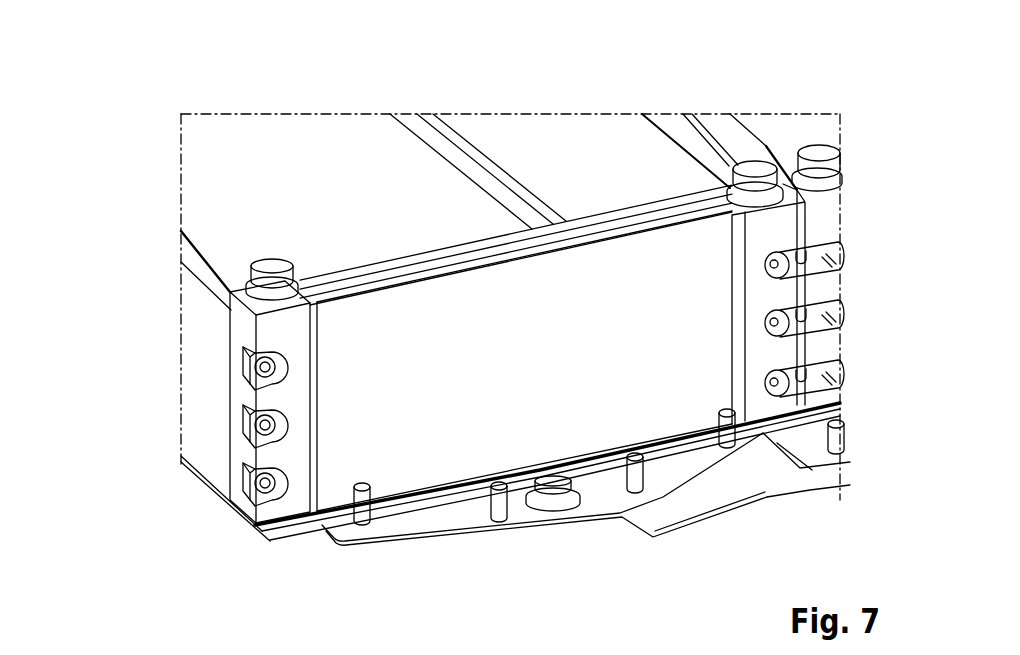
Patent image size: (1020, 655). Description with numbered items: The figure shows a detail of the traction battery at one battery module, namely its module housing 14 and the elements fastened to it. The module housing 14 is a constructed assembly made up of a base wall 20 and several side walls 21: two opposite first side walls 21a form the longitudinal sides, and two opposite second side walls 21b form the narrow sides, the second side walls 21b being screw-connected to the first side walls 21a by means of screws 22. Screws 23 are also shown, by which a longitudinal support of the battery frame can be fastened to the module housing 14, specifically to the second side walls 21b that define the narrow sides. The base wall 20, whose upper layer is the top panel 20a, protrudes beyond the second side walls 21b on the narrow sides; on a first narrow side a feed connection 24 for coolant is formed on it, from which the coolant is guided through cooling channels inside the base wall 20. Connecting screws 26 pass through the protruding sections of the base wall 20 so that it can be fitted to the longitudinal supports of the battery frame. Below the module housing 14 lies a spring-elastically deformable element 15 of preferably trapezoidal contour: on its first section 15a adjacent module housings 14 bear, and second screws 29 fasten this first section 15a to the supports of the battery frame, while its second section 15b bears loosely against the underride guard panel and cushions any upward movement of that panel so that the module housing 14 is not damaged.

The module housing 14 is at (835, 228).
The spring-elastically deformable element 15 is at (624, 528).
The first section 15a is at (832, 476).
The second section 15b is at (659, 525).
The base wall 20 is at (528, 281).
The top panel 20a is at (314, 130).
The side wall 21 is at (409, 266).
The first side wall 21a is at (550, 130).
The second side wall 21b is at (409, 315).
The screw 22 is at (243, 356).
The screw 23 is at (271, 262).
The feed connection 24 is at (551, 474).
The connecting screw 26 is at (362, 514).
The second screw 29 is at (838, 440).